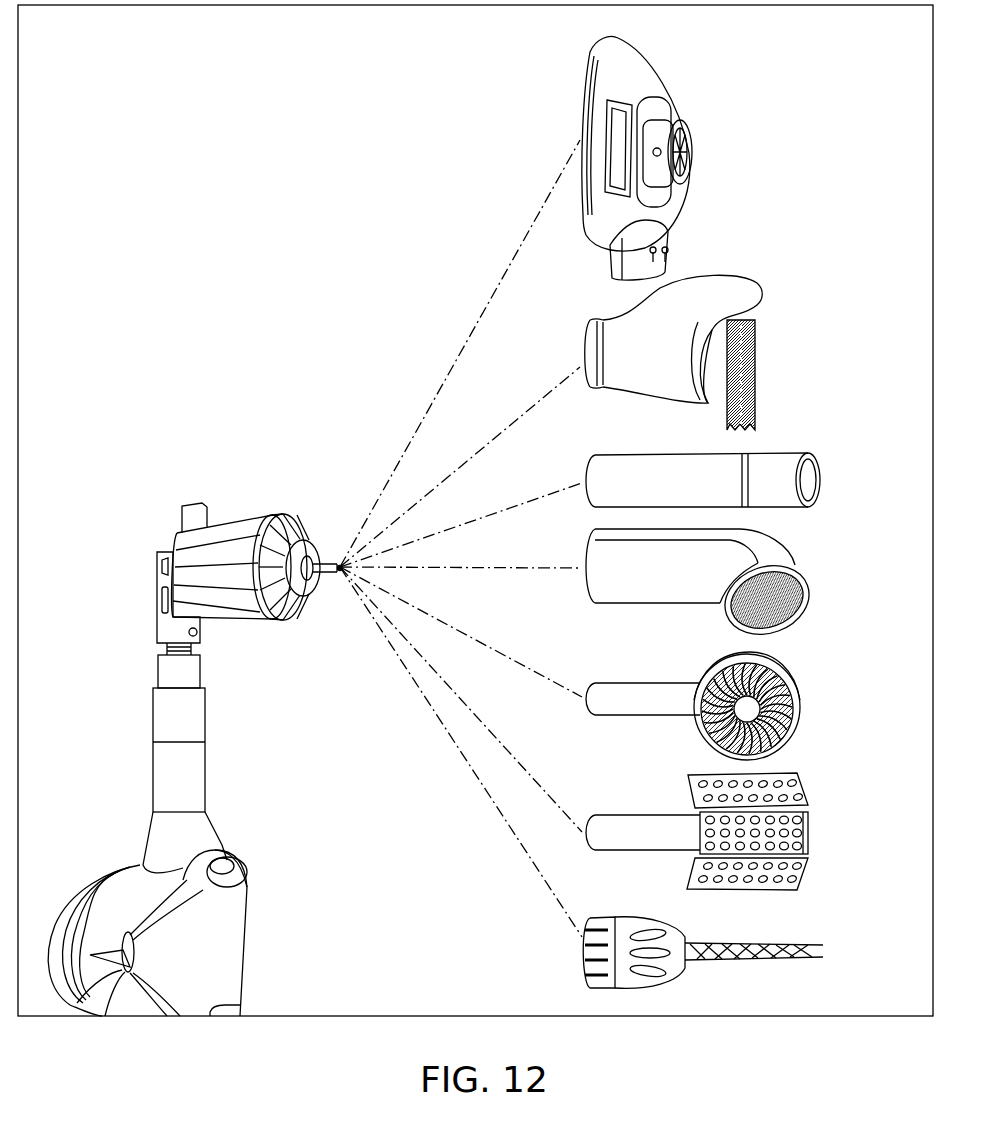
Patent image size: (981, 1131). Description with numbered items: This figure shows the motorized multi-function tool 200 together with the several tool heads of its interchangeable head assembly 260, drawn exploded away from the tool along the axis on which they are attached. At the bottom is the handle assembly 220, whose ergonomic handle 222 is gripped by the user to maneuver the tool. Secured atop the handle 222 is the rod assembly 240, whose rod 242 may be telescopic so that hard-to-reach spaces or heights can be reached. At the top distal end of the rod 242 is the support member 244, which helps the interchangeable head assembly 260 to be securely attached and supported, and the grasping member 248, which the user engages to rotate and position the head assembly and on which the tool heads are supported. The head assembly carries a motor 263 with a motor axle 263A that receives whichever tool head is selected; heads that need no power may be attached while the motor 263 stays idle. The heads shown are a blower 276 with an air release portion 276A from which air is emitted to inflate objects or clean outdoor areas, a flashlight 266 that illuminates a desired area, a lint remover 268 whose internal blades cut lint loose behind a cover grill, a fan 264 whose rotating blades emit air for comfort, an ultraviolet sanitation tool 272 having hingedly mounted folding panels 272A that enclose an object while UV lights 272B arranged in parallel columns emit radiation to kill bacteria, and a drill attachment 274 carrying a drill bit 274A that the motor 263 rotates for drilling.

The motorized multi-function tool 200 is at (128, 450).
The handle assembly 220 is at (250, 957).
The handle 222 is at (227, 923).
The rod assembly 240 is at (147, 775).
The rod 242 is at (187, 718).
The support member 244 is at (157, 617).
The grasping member 248 is at (197, 515).
The interchangeable head assembly 260 is at (222, 517).
The motor 263 is at (283, 540).
The motor axle 263A is at (320, 587).
The fan 264 is at (795, 684).
The flashlight 266 is at (773, 473).
The lint remover 268 is at (660, 573).
The ultraviolet (UV) sanitation tool 272 is at (800, 782).
The folding panels 272A is at (797, 840).
The ultraviolet (UV) lights 272B is at (797, 860).
The drill attachment 274 is at (623, 962).
The drill bit 274A is at (800, 945).
The blower 276 is at (660, 85).
The air release portion 276A is at (653, 237).